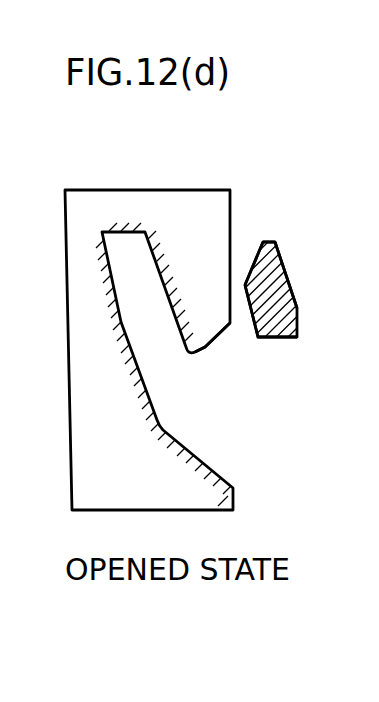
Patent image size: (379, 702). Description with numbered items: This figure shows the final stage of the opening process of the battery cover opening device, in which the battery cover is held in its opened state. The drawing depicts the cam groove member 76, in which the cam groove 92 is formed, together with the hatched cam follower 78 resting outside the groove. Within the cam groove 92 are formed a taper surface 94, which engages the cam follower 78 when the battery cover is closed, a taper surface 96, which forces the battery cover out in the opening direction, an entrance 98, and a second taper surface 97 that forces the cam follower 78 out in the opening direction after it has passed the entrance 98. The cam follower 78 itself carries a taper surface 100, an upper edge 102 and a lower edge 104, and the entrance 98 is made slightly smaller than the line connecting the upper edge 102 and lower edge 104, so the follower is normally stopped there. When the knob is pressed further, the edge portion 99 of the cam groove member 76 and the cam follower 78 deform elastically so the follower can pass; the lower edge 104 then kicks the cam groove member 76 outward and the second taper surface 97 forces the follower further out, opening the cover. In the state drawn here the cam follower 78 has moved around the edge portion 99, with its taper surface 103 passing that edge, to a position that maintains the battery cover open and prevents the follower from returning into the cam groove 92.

The cam groove member 76 is at (77, 293).
The cam follower 78 is at (274, 292).
The cam groove 92 is at (122, 240).
The taper surface 94 is at (148, 236).
The taper surface 96 is at (130, 350).
The second taper surface 97 is at (195, 452).
The entrance 98 is at (173, 388).
The edge portion 99 is at (208, 348).
The taper surface 100 is at (284, 262).
The upper edge 102 is at (268, 241).
The taper surface 103 is at (254, 262).
The lower edge 104 is at (262, 339).